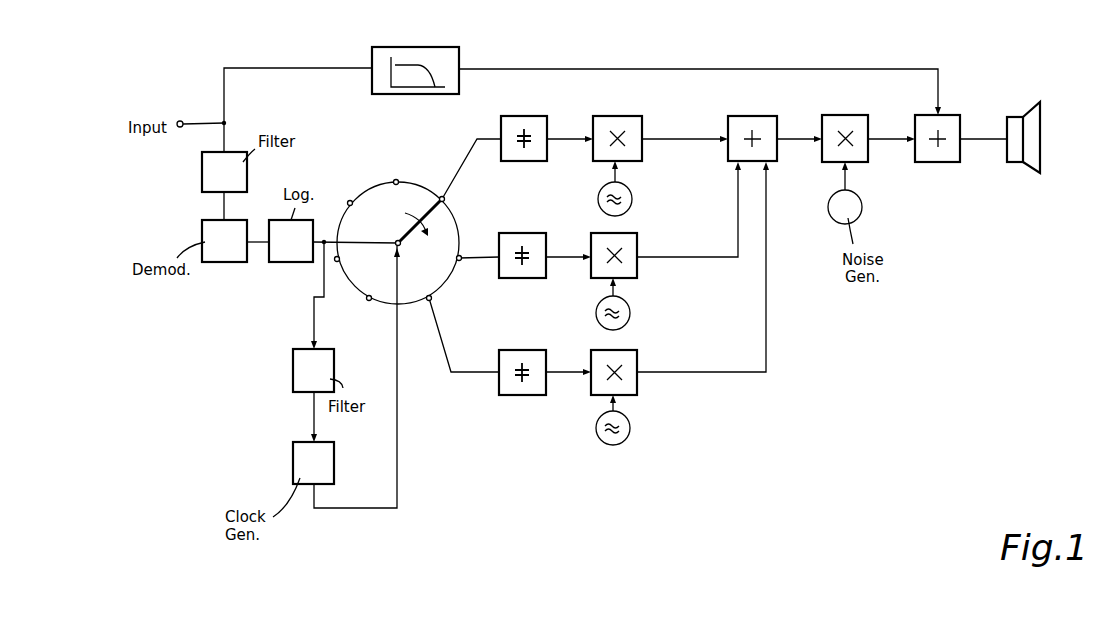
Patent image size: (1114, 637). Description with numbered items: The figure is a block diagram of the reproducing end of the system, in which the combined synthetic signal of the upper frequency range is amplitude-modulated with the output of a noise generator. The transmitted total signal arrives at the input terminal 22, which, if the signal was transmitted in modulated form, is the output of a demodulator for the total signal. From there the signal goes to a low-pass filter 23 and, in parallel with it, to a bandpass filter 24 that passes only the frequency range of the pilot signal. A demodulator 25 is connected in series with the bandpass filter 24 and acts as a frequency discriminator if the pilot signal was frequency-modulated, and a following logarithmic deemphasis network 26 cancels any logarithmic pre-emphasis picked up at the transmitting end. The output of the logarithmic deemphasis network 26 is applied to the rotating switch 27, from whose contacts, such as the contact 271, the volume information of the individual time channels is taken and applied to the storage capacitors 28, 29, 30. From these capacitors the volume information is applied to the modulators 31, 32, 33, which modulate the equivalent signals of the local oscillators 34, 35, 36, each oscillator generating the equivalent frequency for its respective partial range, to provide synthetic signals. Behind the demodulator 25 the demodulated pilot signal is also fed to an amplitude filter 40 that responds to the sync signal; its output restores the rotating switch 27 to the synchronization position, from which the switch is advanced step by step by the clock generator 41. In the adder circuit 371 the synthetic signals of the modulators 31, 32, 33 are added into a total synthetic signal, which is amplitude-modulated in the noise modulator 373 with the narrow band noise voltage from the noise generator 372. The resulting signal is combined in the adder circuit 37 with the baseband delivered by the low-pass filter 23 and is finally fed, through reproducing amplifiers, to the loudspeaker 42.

The input terminal 22 is at (199, 113).
The low-pass filter 23 is at (420, 47).
The bandpass filter 24 is at (205, 168).
The demodulator 25 is at (224, 262).
The logarithmic deemphasis network 26 is at (294, 262).
The rotating switch 27 is at (396, 240).
The contact of rotating switch 271 is at (441, 197).
The storage capacitor 28 is at (526, 117).
The storage capacitor 29 is at (519, 234).
The storage capacitor 30 is at (519, 351).
The modulator 31 is at (618, 117).
The modulator 32 is at (631, 246).
The modulator 33 is at (631, 363).
The local oscillator 34 is at (598, 199).
The local oscillator 35 is at (596, 313).
The local oscillator 36 is at (596, 428).
The adder circuit 371 is at (753, 117).
The noise generator 372 is at (853, 203).
The noise modulator 373 is at (845, 119).
The adder circuit 37 is at (950, 121).
The amplitude filter 40 is at (298, 370).
The clock generator 41 is at (296, 462).
The loudspeaker 42 is at (1035, 118).